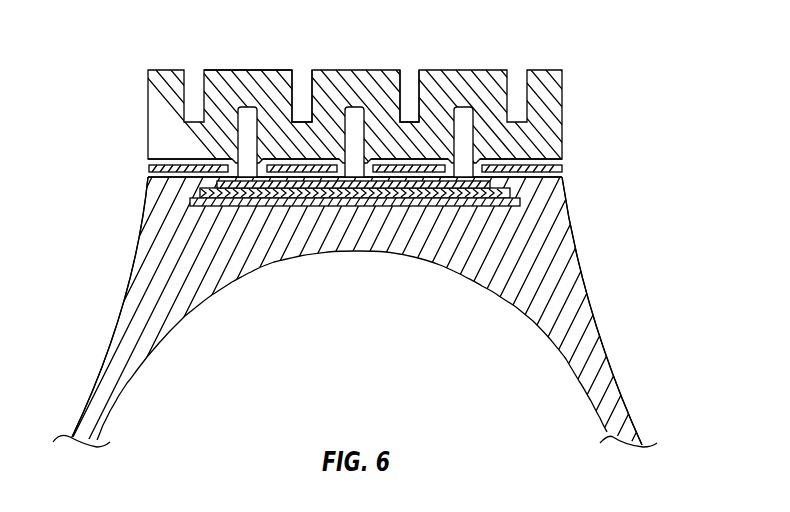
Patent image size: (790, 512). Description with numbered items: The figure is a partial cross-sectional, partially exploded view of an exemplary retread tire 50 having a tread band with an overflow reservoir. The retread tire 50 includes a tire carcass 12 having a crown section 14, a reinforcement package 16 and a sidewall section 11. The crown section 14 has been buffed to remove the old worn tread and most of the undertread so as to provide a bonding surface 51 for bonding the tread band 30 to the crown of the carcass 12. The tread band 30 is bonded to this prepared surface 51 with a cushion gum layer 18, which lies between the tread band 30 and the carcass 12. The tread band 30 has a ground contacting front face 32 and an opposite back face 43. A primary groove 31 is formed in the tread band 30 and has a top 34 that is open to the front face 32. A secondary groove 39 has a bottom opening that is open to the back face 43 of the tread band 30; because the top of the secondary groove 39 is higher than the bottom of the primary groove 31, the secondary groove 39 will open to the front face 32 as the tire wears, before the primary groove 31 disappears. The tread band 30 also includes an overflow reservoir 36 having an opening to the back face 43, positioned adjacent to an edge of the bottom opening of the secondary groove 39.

The sidewall section 11 is at (82, 398).
The tire carcass 12 is at (122, 300).
The crown section 14 is at (148, 219).
The reinforcement package 16 is at (362, 207).
The cushion gum layer 18 is at (148, 170).
The tread band 30 is at (148, 102).
The primary groove 31 is at (408, 70).
The front face 32 is at (231, 69).
The top 34 is at (300, 77).
The overflow reservoir 36 is at (260, 150).
The secondary groove 39 is at (465, 137).
The back face 43 is at (148, 164).
The retread tire 50 is at (610, 333).
The bonding surface 51 is at (565, 178).